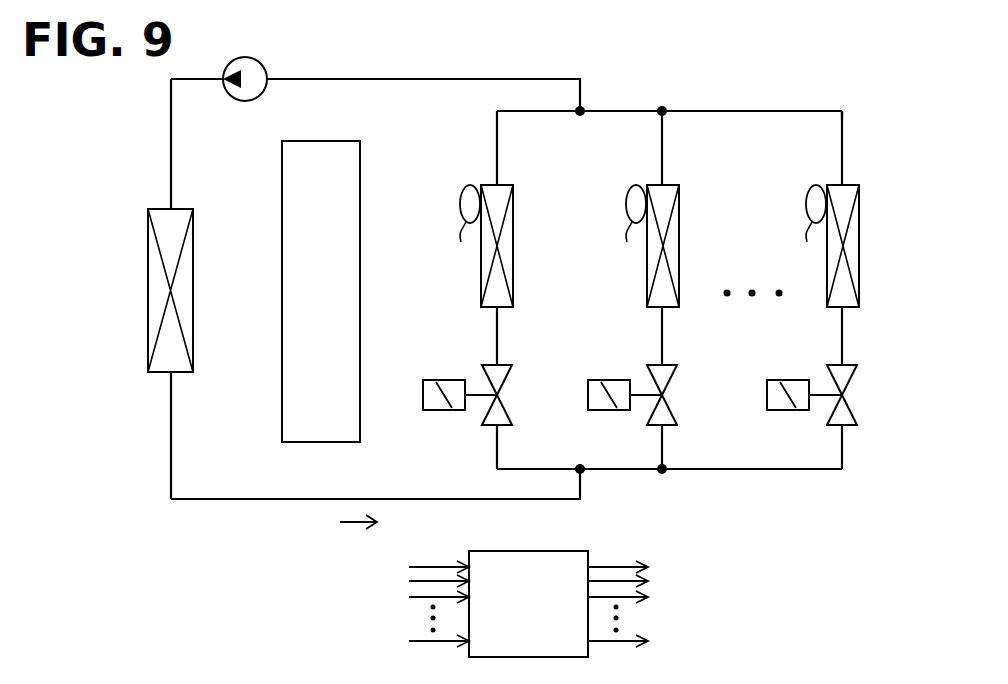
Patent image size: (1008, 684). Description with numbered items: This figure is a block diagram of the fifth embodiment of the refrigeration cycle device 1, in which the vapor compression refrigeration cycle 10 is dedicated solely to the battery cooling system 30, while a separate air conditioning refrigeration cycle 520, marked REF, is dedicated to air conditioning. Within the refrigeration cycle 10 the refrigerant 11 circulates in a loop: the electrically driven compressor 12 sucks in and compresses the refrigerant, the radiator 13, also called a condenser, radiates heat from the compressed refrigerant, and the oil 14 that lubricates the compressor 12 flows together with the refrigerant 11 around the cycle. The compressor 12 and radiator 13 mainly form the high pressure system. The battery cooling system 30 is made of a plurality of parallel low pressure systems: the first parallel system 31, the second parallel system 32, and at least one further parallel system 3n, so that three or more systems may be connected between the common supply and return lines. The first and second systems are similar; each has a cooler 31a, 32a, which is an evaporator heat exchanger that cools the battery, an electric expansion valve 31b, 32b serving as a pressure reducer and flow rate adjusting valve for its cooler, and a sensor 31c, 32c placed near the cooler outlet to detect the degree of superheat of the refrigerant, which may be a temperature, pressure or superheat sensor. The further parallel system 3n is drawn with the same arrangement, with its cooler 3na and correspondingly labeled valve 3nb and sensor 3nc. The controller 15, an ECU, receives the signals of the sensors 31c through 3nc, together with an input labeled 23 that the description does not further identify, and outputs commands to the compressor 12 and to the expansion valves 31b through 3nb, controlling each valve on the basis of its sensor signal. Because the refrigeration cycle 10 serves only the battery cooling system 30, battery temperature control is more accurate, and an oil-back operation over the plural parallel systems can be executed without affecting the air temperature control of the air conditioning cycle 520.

The refrigeration cycle device 1 is at (847, 75).
The refrigeration cycle 10 is at (637, 73).
The refrigerant 11 is at (360, 79).
The compressor 12 is at (266, 62).
The radiator 13 is at (182, 209).
The oil 14 is at (171, 475).
The controller 15 is at (585, 551).
The sensor 23 is at (422, 567).
The battery cooling system 30 is at (732, 100).
The first parallel system 31 is at (477, 169).
The cooler 31a is at (503, 185).
The electric expansion valve 31b is at (483, 418).
The sensor 31c is at (453, 232).
The second parallel system 32 is at (645, 169).
The cooler 32a is at (668, 185).
The electric expansion valve 32b is at (649, 418).
The sensor 32c is at (621, 232).
The parallel system 3n is at (825, 169).
The cooler 3na is at (848, 185).
The n-th valve 3nb is at (829, 418).
The n-th temperature sensor 3nc is at (801, 232).
The air conditioning refrigeration cycle 520 is at (344, 128).